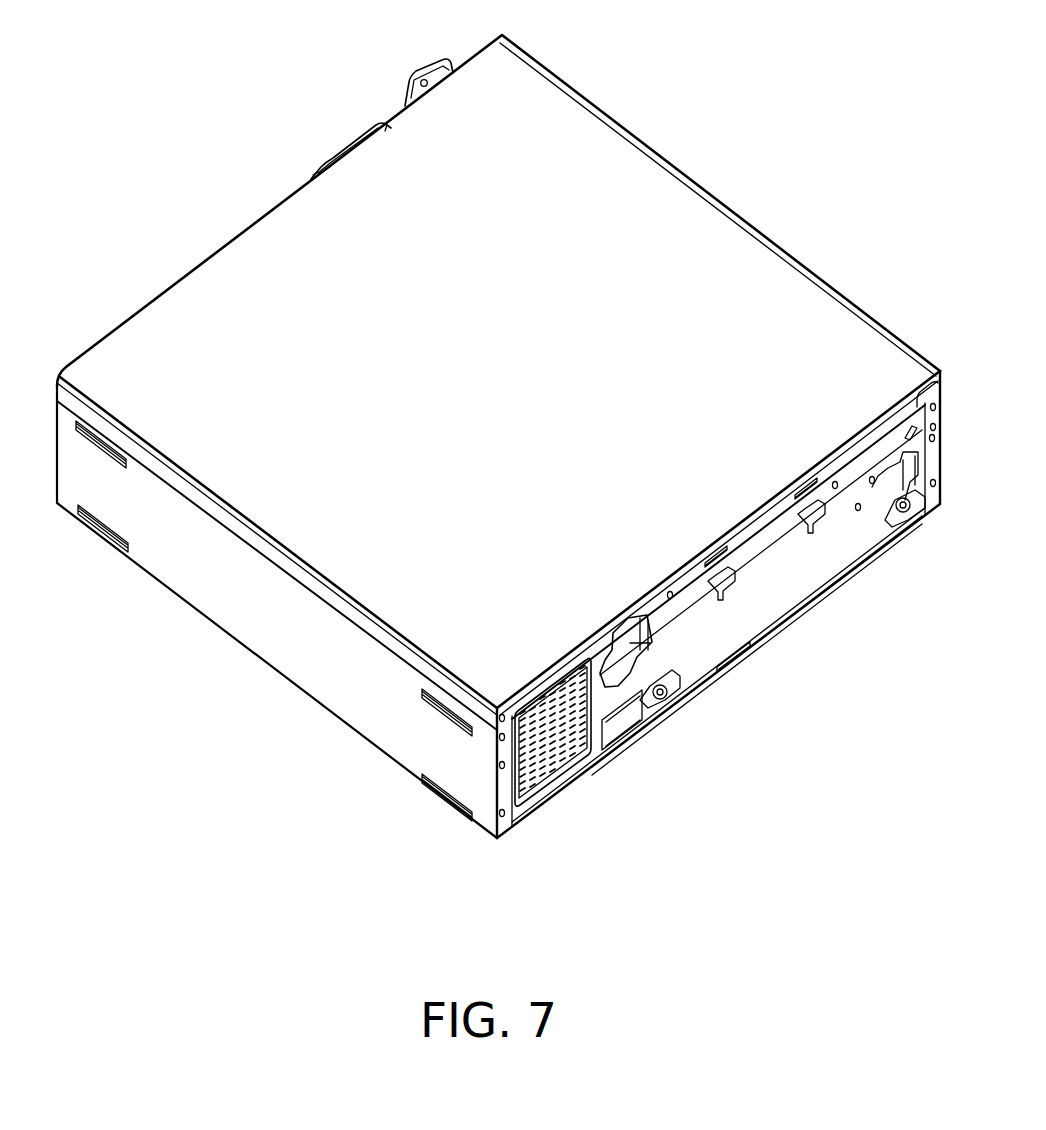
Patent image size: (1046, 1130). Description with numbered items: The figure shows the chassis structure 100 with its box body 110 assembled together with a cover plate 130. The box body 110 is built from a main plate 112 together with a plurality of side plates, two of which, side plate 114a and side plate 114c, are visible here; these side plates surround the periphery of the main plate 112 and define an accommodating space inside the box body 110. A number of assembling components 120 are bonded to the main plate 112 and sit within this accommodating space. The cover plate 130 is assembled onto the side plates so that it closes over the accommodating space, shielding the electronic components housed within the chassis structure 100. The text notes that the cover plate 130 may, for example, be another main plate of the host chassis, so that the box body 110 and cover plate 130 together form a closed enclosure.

The chassis structure 100 is at (500, 464).
The box body 110 is at (500, 604).
The main plate 112 is at (732, 628).
The side plate 114a is at (790, 547).
The side plate 114c is at (272, 655).
The assembling component 120 is at (650, 703).
The cover plate 130 is at (703, 218).